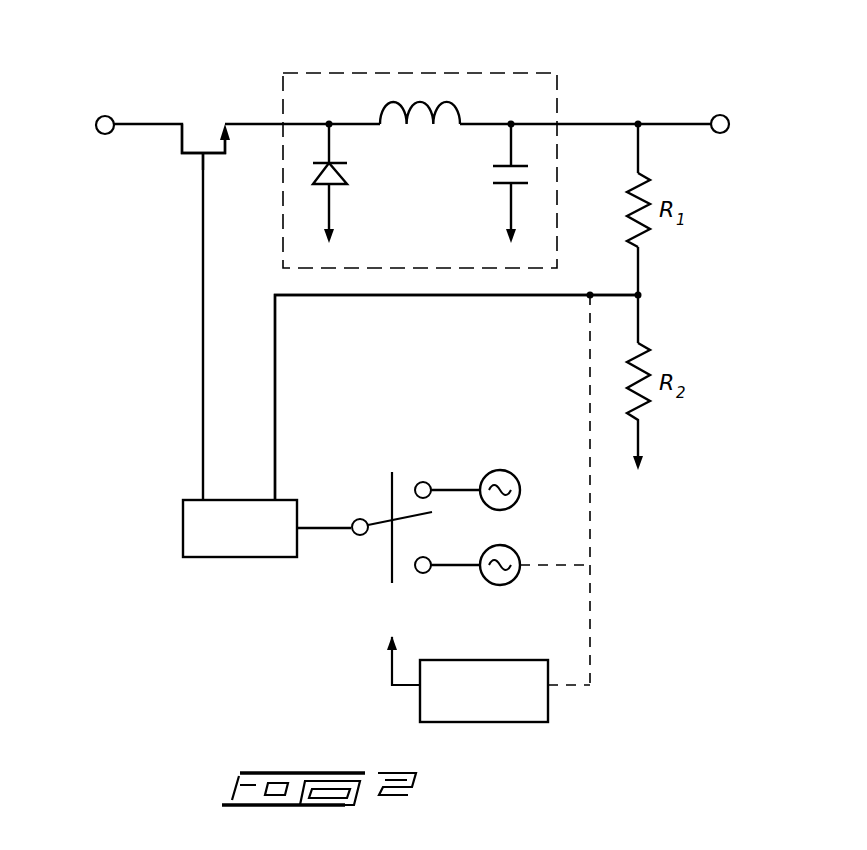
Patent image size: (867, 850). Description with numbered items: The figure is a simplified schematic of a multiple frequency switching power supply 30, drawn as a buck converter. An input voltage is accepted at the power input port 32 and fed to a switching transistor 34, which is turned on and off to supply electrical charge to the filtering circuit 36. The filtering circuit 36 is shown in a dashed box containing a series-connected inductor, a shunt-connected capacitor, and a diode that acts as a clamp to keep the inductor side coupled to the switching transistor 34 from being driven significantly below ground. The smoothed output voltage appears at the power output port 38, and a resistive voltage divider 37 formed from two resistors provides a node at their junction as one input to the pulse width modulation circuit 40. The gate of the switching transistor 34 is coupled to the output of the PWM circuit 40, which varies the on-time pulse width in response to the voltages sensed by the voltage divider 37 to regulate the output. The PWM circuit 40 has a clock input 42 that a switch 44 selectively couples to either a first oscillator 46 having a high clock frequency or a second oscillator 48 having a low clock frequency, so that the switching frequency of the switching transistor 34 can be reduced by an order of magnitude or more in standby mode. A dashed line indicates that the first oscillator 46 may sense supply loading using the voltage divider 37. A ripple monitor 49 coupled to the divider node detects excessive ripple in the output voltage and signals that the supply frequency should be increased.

The multiple frequency switching power supply 30 is at (228, 630).
The power input port 32 is at (105, 116).
The switching transistor 34 is at (178, 138).
The filtering circuit 36 is at (363, 72).
The voltage divider 37 is at (652, 97).
The power output port 38 is at (717, 132).
The pulse width modulation circuit 40 is at (183, 530).
The input 42 is at (297, 523).
The switch 44 is at (370, 555).
The first oscillator 46 is at (497, 587).
The second oscillator 48 is at (490, 470).
The ripple monitor 49 is at (480, 723).